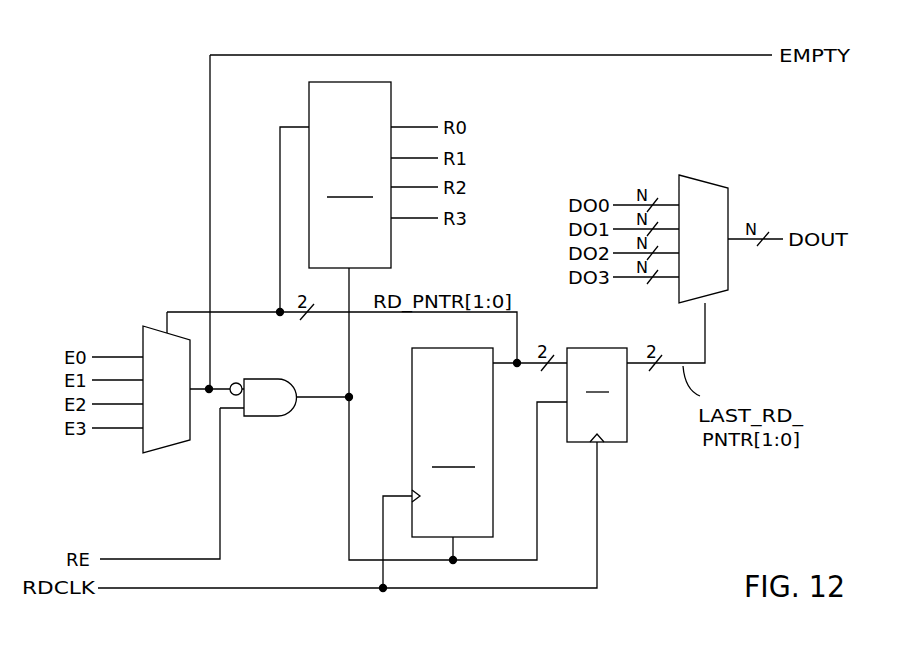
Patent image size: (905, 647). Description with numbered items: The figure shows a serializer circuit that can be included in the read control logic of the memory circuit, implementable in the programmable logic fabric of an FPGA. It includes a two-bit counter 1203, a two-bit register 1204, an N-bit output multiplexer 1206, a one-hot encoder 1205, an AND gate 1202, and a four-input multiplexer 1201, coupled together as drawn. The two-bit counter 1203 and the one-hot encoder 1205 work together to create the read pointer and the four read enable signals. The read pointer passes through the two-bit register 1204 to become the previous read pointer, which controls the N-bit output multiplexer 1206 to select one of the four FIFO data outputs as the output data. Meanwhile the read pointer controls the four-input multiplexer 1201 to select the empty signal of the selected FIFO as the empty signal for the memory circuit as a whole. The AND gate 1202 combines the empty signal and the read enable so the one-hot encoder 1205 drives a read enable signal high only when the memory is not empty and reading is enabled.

The 4-input multiplexer 1201 is at (157, 453).
The AND gate 1202 is at (258, 379).
The 2-bit counter 1203 is at (452, 454).
The 2-bit register 1204 is at (627, 402).
The one-hot encoder 1205 is at (350, 175).
The N-bit output multiplexer 1206 is at (710, 182).